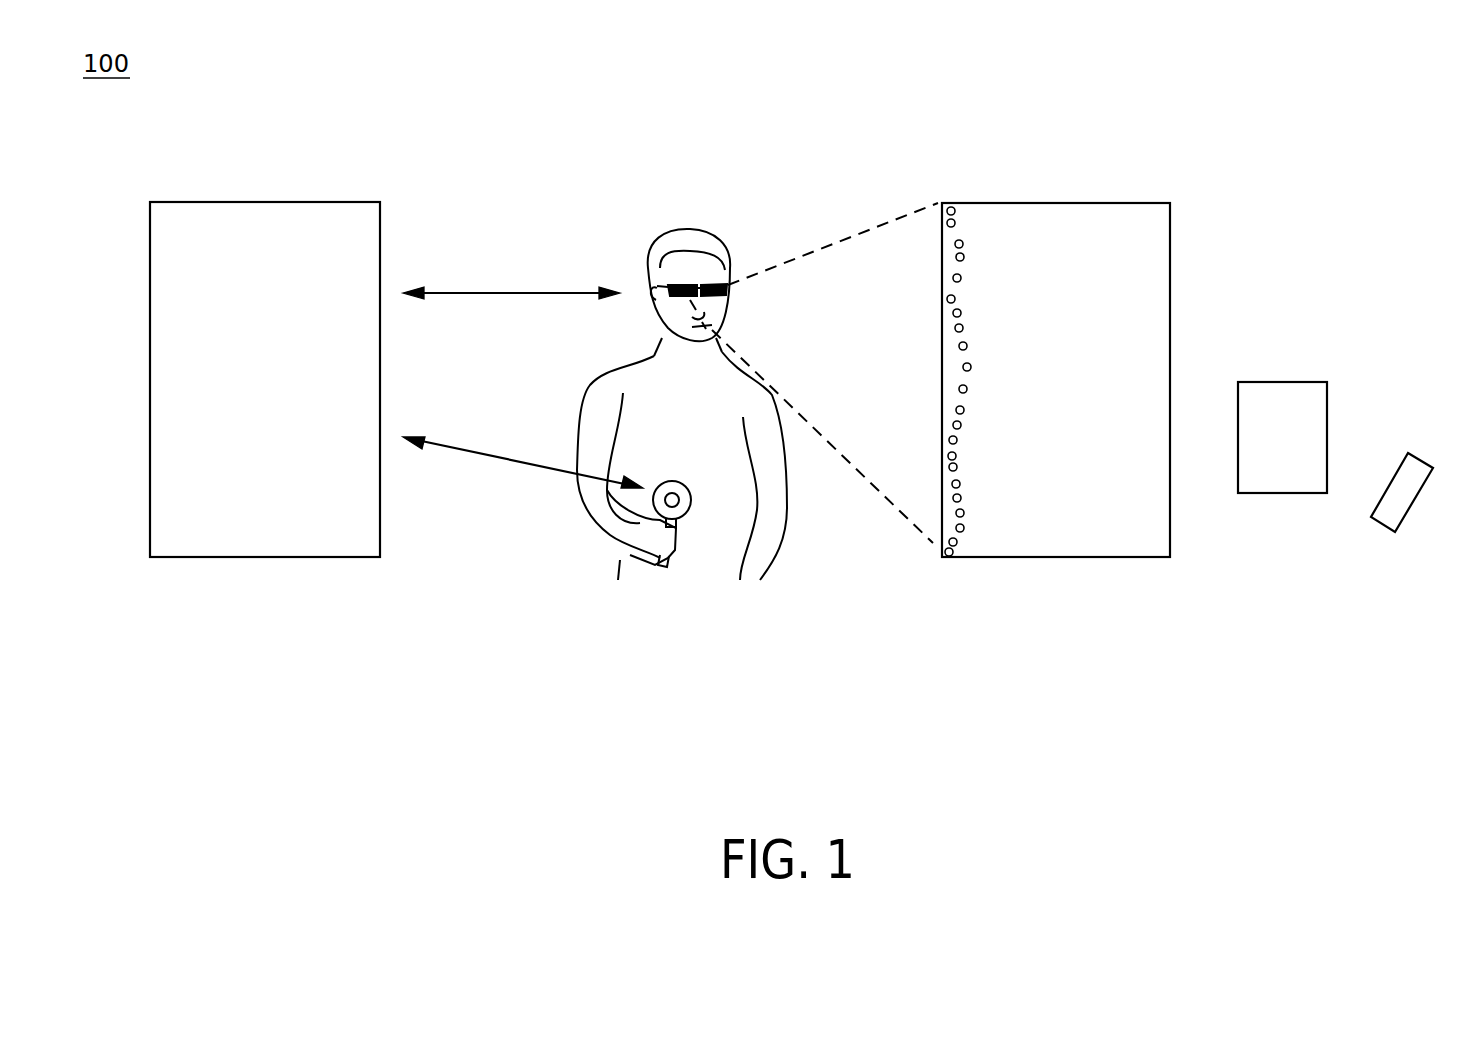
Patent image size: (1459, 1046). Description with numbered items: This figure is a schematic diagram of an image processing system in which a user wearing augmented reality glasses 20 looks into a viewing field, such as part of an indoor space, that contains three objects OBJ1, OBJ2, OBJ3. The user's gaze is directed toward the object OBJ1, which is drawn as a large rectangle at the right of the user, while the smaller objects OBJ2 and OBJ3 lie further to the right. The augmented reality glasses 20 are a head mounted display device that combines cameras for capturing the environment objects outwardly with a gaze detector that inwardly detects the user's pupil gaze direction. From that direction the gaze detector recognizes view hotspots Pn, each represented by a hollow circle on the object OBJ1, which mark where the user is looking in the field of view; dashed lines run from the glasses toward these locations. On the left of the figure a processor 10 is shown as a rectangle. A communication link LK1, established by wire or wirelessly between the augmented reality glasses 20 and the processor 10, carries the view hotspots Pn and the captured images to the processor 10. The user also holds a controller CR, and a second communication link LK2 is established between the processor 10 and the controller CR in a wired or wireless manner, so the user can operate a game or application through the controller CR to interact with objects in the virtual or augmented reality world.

The processor 10 is at (264, 201).
The augmented reality glasses 20 is at (728, 286).
The communication link LK1 is at (511, 282).
The communication link LK2 is at (523, 457).
The controller CR is at (688, 505).
The object OBJ1 is at (1058, 202).
The object OBJ2 is at (1284, 381).
The object OBJ3 is at (1421, 458).
The view hotspot Pn is at (951, 207).